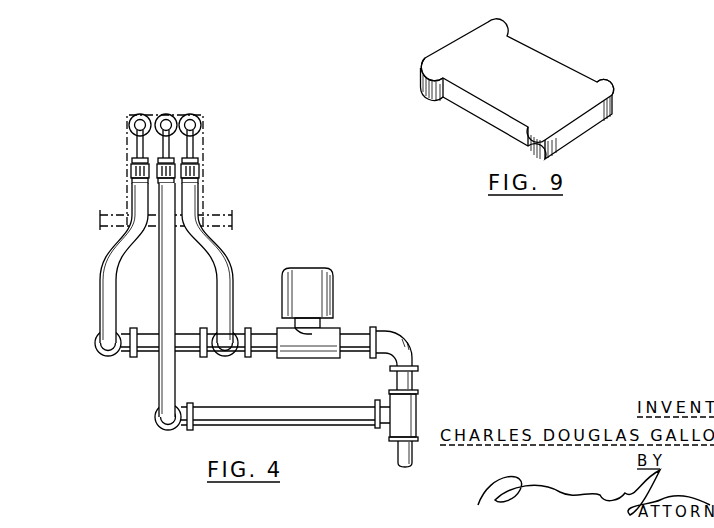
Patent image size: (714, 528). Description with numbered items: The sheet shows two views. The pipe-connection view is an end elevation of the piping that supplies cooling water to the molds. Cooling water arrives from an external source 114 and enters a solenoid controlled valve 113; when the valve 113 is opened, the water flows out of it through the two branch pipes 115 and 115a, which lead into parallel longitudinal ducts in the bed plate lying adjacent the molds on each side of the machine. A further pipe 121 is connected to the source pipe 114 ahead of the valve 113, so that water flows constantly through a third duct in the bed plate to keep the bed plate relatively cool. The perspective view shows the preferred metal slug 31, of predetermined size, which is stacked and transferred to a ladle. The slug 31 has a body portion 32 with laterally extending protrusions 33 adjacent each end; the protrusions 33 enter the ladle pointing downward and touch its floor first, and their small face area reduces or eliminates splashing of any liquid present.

In FIG. 4, the solenoid controlled valve 113 is at (305, 270).
In FIG. 4, the external source 114 is at (398, 452).
In FIG. 4, the branch pipe 115 is at (198, 147).
In FIG. 4, the branch pipe 115a is at (137, 147).
In FIG. 4, the pipe 121 is at (236, 413).
In FIG. 9, the metal slug 31 is at (504, 75).
In FIG. 9, the body portion 32 is at (542, 71).
In FIG. 9, the laterally extending protrusion 33 is at (421, 70).